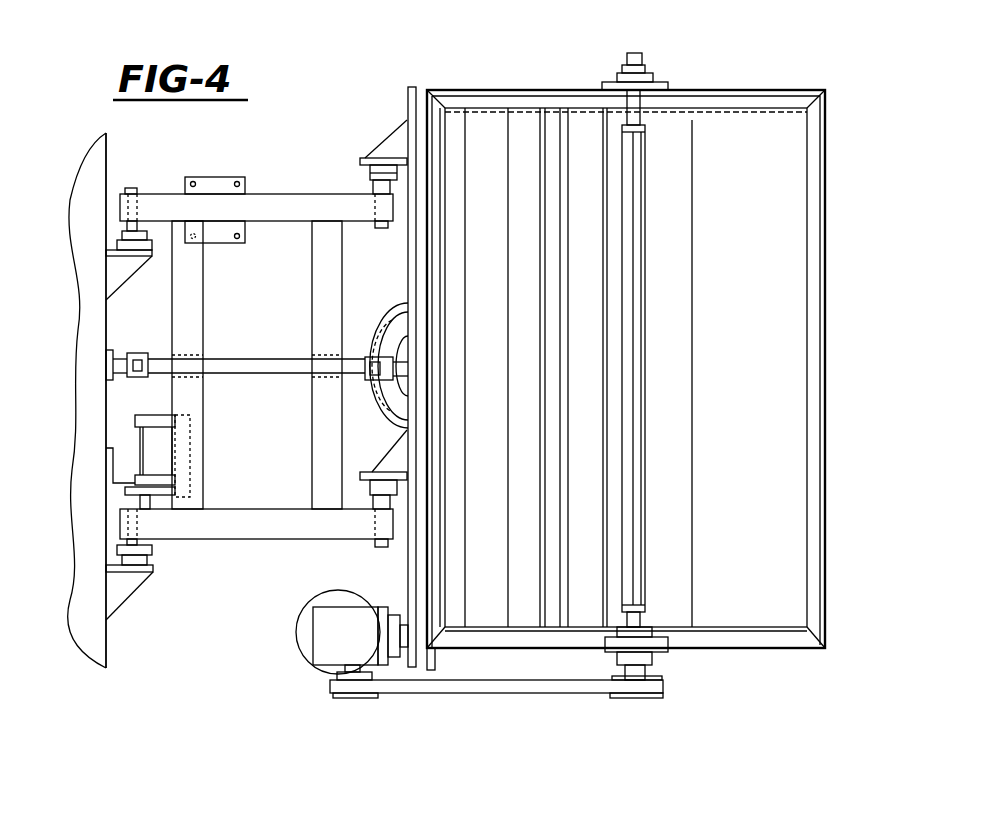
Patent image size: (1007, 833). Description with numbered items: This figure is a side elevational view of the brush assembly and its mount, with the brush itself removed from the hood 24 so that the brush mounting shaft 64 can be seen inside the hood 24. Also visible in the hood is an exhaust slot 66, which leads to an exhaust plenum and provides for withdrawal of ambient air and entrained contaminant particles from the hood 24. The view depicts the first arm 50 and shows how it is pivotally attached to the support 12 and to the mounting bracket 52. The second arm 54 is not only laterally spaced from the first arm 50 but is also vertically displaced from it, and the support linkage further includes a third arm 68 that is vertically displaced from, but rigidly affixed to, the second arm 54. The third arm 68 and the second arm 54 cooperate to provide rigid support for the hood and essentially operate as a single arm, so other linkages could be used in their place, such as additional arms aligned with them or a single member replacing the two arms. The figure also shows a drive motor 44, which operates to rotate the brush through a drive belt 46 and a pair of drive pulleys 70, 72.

The support 12 is at (84, 615).
The hood 24 is at (762, 90).
The drive motor 44 is at (296, 652).
The drive belt 46 is at (507, 694).
The first arm 50 is at (262, 359).
The mounting bracket 52 is at (408, 272).
The second arm 54 is at (291, 194).
The brush mounting shaft 64 is at (645, 255).
The exhaust slot 66 is at (500, 242).
The third arm 68 is at (240, 540).
The drive pulley 70 is at (370, 698).
The drive pulley 72 is at (648, 694).